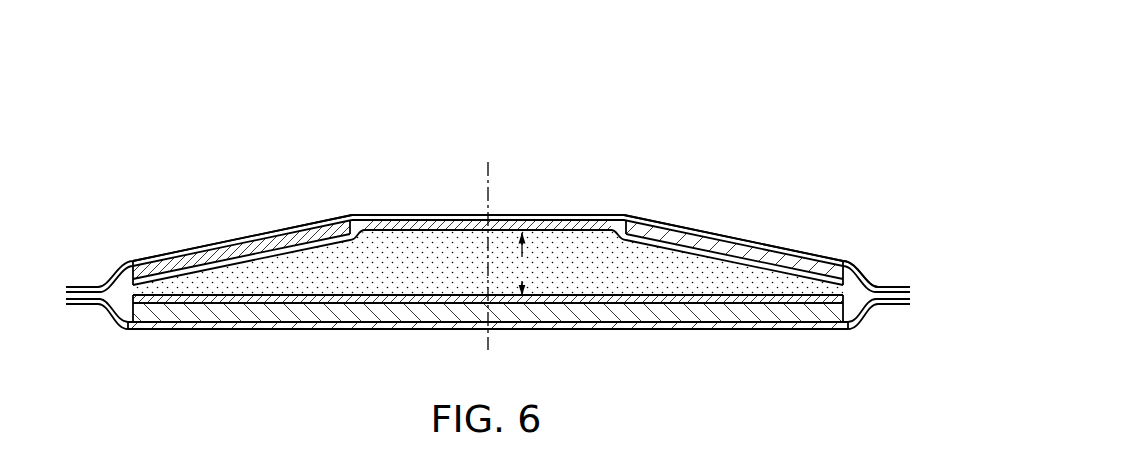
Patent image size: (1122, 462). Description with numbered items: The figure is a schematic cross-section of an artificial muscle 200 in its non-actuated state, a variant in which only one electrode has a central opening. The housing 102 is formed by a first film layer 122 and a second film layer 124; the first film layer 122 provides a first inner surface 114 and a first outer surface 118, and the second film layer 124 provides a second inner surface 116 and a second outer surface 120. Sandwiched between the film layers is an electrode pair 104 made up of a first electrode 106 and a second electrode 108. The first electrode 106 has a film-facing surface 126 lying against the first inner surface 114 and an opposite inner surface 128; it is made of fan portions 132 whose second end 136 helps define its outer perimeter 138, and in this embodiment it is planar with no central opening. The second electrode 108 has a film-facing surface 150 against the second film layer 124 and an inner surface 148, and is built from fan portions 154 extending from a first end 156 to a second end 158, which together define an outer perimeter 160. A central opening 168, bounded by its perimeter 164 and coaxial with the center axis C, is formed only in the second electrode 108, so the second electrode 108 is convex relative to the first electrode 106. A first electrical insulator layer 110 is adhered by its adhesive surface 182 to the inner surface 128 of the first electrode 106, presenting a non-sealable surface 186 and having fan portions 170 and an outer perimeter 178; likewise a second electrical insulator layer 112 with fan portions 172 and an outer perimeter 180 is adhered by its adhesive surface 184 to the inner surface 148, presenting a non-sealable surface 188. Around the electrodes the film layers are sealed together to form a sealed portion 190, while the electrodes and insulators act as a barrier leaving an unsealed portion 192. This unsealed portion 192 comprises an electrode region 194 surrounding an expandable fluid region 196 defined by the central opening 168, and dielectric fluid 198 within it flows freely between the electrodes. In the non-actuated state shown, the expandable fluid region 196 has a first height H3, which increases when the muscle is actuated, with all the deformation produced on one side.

The artificial muscle 200 is at (491, 167).
The housing 102 is at (488, 199).
The electrode pair 104 is at (488, 373).
The first electrode 106 is at (488, 365).
The second electrode 108 is at (734, 218).
The first electrical insulator layer 110 is at (463, 287).
The second electrical insulator layer 112 is at (475, 240).
The first inner surface 114 is at (122, 313).
The second inner surface 116 is at (112, 278).
The first outer surface 118 is at (78, 308).
The second outer surface 120 is at (72, 286).
The first film layer 122 is at (488, 358).
The second film layer 124 is at (488, 163).
The film-facing surface 126 is at (298, 313).
The inner surface 128 is at (254, 313).
The fan portions 132 is at (330, 355).
The second end 136 is at (150, 305).
The outer perimeter 138 is at (126, 321).
The inner surface 148 is at (228, 250).
The film-facing surface 150 is at (253, 246).
The fan portions 154 is at (241, 213).
The first end 156 is at (357, 214).
The second end 158 is at (146, 276).
The outer perimeter 160 is at (130, 260).
The perimeter 164 is at (632, 242).
The central opening 168 is at (488, 177).
The fan portions 170 is at (829, 346).
The fan portions 172 is at (752, 230).
The outer perimeter 178 is at (863, 306).
The outer perimeter 180 is at (860, 287).
The adhesive surface 182 is at (645, 297).
The adhesive surface 184 is at (668, 262).
The non-sealable surface 186 is at (605, 294).
The non-sealable surface 188 is at (597, 230).
The sealed portion 190 is at (916, 295).
The unsealed portion 192 is at (631, 216).
The electrode region 194 is at (733, 199).
The expandable fluid region 196 is at (564, 221).
The dielectric fluid 198 is at (568, 288).
The center axis C is at (488, 172).
The first height H3 is at (522, 264).